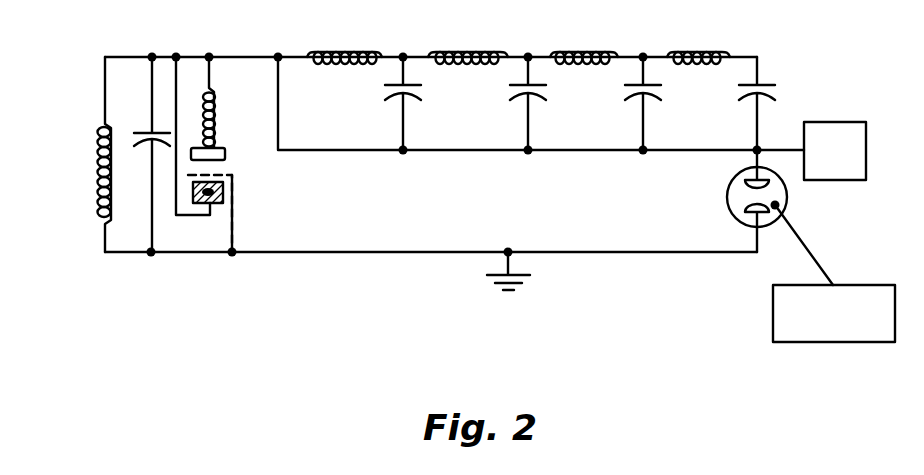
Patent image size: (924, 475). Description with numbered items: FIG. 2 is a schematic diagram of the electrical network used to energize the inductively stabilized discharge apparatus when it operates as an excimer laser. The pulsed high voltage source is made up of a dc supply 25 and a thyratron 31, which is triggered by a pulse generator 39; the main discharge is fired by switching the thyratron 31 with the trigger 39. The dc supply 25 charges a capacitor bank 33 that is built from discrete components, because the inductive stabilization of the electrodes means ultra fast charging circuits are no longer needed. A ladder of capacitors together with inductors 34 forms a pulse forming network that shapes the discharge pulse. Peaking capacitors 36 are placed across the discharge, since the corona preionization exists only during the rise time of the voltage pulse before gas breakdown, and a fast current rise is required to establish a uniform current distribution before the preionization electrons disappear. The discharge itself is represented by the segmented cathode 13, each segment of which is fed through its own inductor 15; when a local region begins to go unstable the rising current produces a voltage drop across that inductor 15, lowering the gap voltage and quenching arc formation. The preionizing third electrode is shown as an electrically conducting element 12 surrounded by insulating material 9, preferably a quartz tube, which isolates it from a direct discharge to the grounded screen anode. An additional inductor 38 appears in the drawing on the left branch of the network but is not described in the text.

The insulating material 9 is at (224, 205).
The electrically conducting element 12 is at (198, 205).
The segmented cathode 13 is at (219, 147).
The inductor 15 is at (202, 108).
The dc supply 25 is at (833, 122).
The thyratron 31 is at (787, 195).
The capacitor bank 33 is at (538, 88).
The inductors 34 is at (597, 50).
The peaking capacitors 36 is at (144, 130).
The inductor coil 38 is at (106, 216).
The pulse generator 39 is at (773, 338).